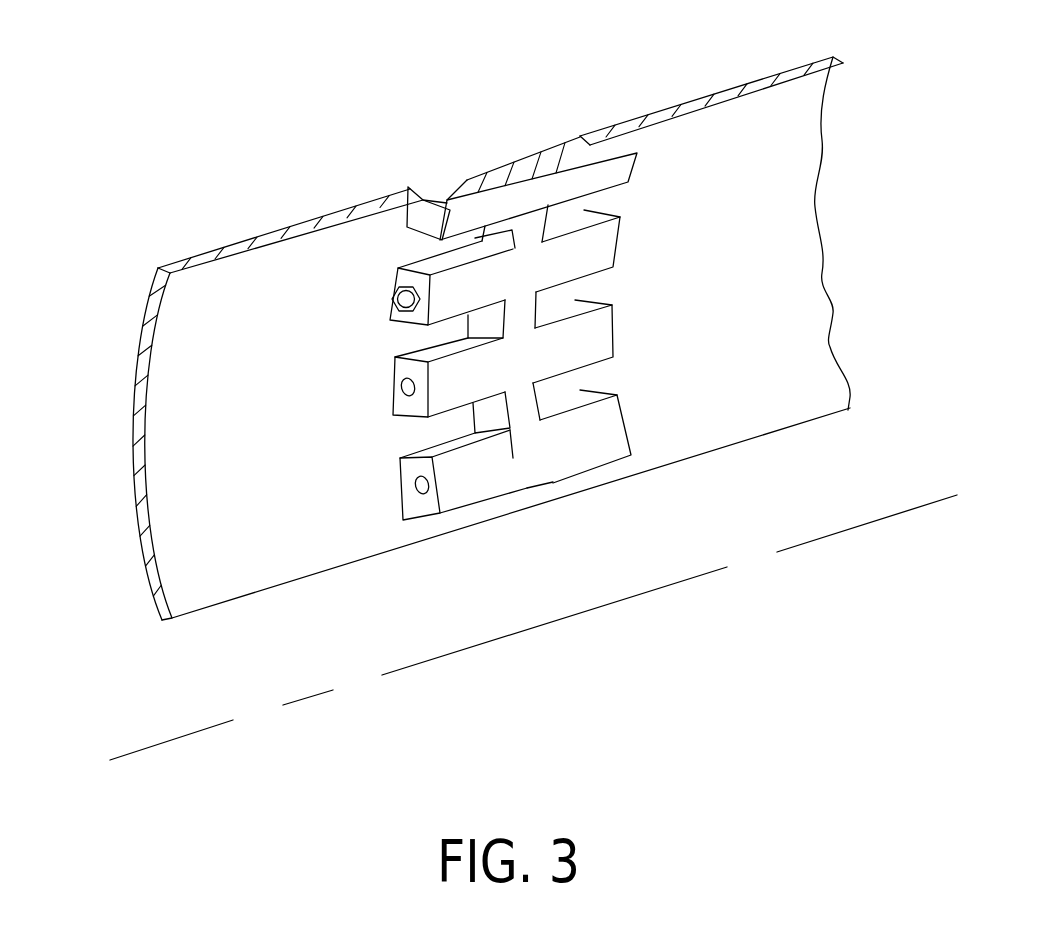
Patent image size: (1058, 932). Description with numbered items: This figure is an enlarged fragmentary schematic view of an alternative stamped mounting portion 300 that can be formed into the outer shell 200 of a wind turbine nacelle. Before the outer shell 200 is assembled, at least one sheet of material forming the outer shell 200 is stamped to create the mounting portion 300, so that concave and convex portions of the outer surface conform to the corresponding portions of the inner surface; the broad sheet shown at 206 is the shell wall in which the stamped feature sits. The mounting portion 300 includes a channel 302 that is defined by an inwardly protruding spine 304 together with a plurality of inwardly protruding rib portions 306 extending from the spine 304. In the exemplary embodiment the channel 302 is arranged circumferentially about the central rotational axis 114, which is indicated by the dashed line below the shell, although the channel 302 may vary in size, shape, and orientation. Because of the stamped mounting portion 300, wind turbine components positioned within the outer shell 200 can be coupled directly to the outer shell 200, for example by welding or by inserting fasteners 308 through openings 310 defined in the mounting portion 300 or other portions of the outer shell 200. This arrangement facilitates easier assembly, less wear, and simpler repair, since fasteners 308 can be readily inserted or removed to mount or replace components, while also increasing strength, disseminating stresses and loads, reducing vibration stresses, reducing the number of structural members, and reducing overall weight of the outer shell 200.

The central rotational axis 114 is at (847, 527).
The outer shell 200 is at (255, 233).
The plate surface 206 is at (775, 349).
The mounting portion 300 is at (479, 328).
The channel 302 is at (518, 148).
The spine 304 is at (542, 490).
The rib portions 306 is at (467, 490).
The fasteners 308 is at (392, 299).
The openings 310 is at (419, 498).